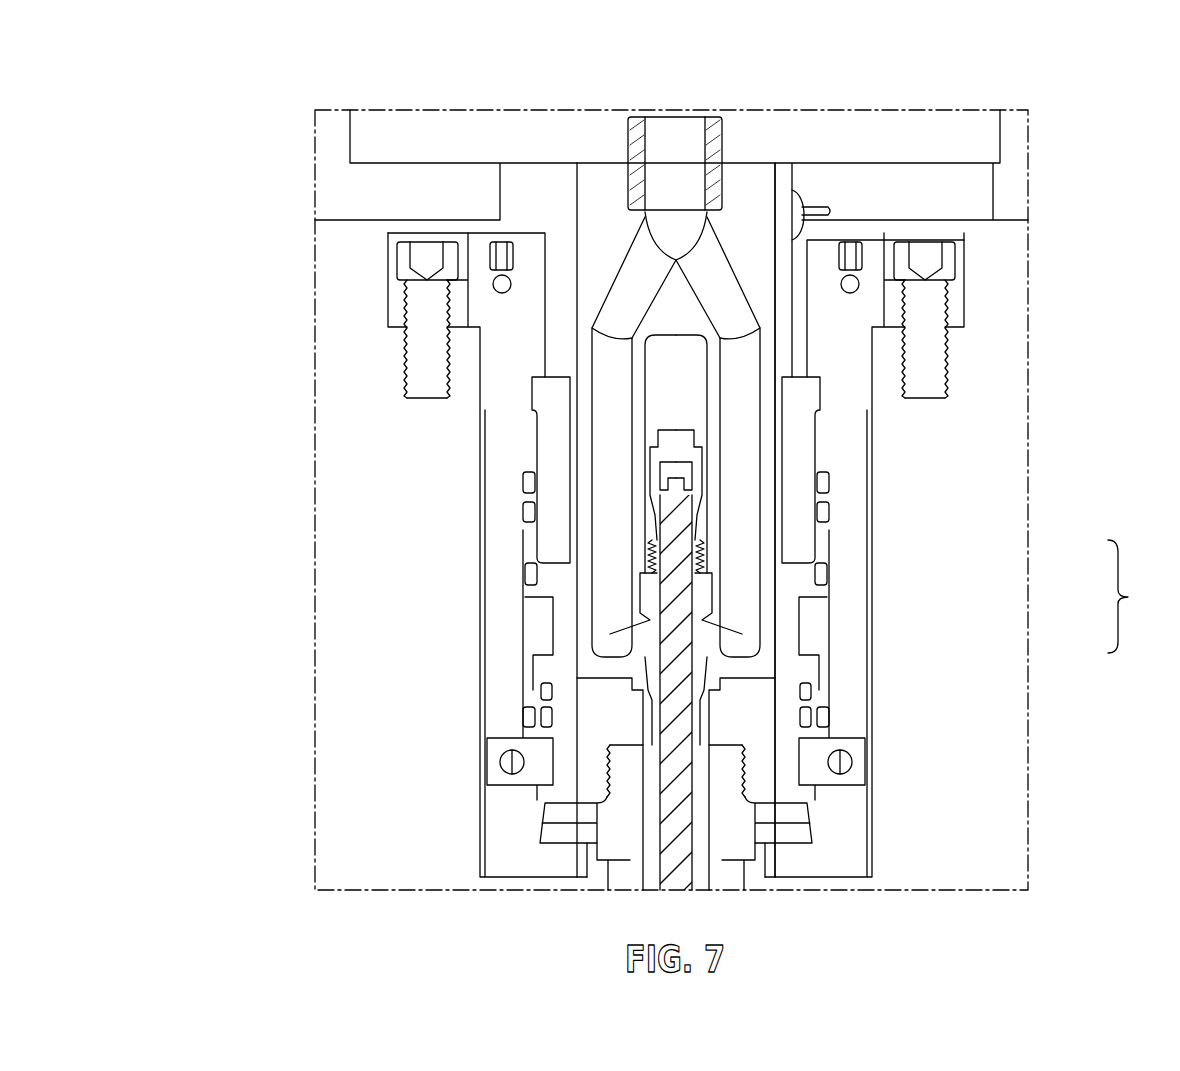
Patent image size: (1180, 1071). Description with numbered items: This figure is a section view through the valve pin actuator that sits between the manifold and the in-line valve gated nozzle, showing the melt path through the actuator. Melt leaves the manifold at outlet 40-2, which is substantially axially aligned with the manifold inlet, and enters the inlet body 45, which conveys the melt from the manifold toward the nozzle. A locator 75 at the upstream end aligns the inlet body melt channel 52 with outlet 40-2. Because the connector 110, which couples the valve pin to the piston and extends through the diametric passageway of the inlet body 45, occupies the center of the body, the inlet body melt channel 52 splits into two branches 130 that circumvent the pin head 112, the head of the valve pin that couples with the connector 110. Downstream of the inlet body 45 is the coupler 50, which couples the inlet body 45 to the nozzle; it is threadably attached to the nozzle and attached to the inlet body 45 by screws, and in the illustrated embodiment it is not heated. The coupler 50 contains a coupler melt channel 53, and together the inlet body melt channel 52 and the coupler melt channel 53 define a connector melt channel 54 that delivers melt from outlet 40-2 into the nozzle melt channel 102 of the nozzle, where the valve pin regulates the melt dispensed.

The locator 75 is at (608, 132).
The outlet 40-2 is at (634, 174).
The inlet body 45 is at (566, 350).
The connector 110 is at (640, 460).
The pin head 112 is at (702, 458).
The branches 130 is at (577, 578).
The coupler 50 is at (564, 702).
The nozzle melt channel 102 is at (642, 812).
The inlet body melt channel 52 is at (781, 480).
The coupler melt channel 53 is at (731, 715).
The connector melt channel 54 is at (1139, 596).